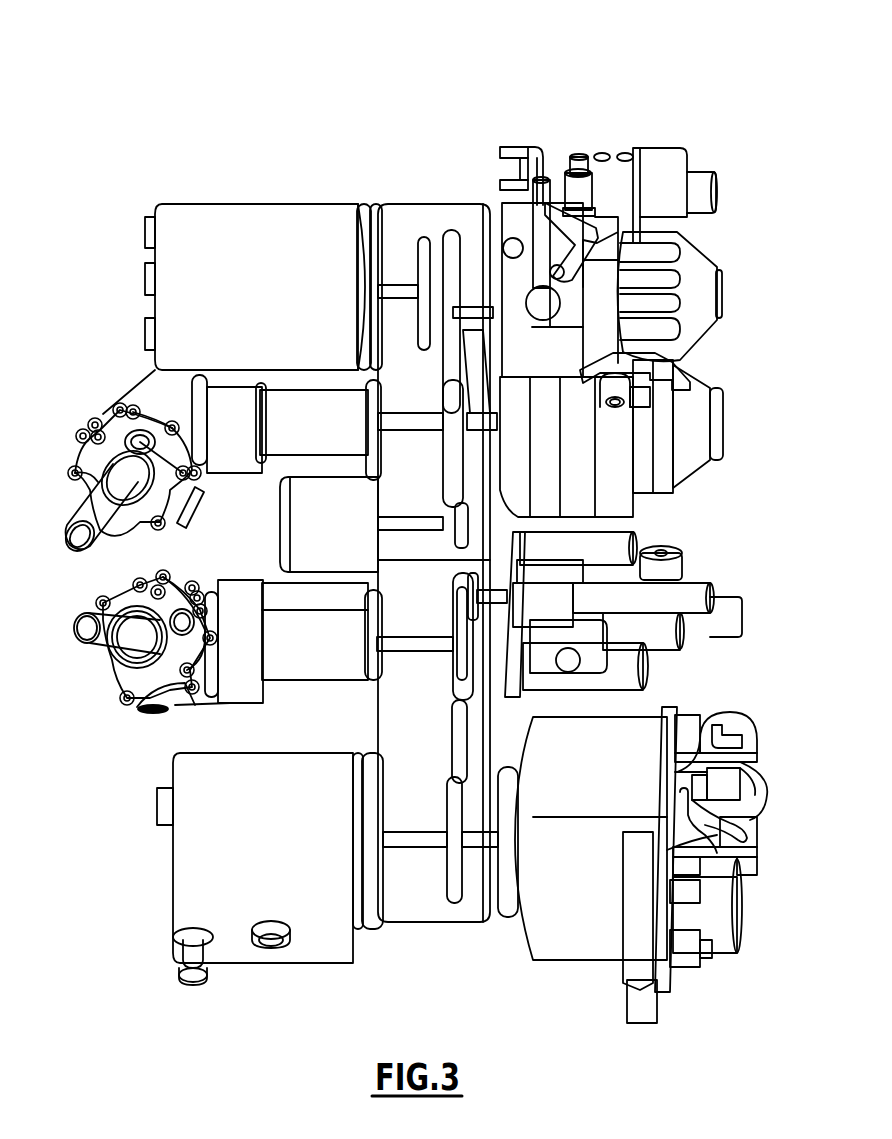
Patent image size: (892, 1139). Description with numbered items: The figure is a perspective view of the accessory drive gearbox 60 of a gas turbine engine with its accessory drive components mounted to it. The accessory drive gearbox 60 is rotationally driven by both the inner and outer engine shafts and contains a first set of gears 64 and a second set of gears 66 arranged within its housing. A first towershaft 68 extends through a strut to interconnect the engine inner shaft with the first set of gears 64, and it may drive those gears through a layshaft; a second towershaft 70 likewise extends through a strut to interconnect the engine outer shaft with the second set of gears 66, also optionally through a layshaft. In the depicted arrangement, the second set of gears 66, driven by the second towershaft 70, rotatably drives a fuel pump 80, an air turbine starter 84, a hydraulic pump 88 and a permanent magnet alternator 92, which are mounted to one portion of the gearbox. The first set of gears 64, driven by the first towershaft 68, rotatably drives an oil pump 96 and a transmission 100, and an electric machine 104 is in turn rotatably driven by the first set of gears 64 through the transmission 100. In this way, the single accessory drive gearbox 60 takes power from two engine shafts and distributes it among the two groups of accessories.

The accessory drive gearbox 60 is at (737, 68).
The first set of gears 64 is at (428, 912).
The second set of gears 66 is at (432, 218).
The first towershaft 68 is at (115, 637).
The second towershaft 70 is at (87, 508).
The fuel pump 80 is at (716, 190).
The air turbine starter 84 is at (725, 425).
The hydraulic pump 88 is at (232, 218).
The permanent magnet alternator 92 is at (280, 537).
The oil pump 96 is at (742, 618).
The transmission 100 is at (172, 888).
The electric machine 104 is at (745, 862).